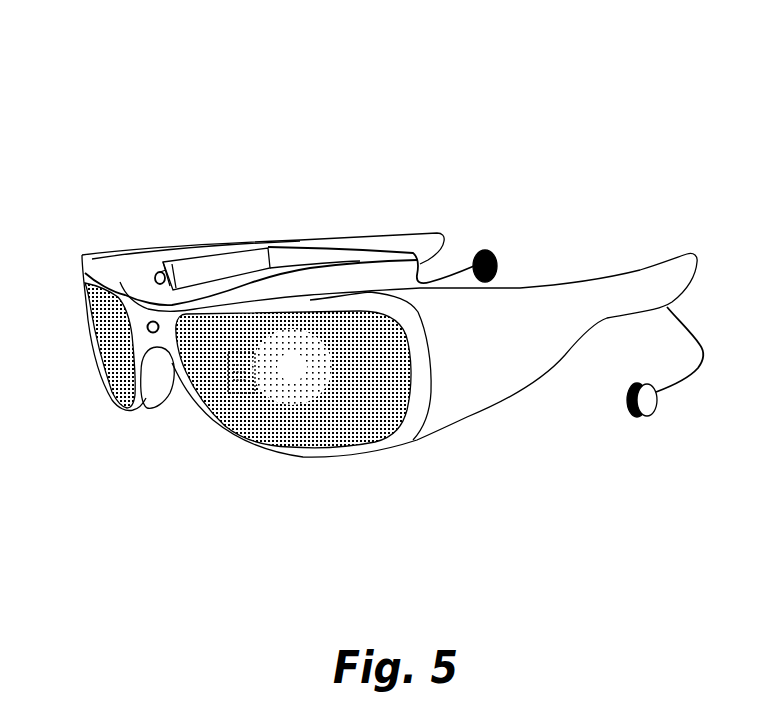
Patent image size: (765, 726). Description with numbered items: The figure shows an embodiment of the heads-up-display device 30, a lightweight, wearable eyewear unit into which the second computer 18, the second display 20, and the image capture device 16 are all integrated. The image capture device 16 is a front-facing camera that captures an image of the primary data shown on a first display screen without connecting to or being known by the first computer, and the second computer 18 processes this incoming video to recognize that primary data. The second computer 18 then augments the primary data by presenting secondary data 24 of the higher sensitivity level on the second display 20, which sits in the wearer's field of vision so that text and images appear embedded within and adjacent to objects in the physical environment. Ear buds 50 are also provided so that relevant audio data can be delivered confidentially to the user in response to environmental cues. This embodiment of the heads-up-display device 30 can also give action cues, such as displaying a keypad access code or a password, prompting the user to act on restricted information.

The heads-up-display device 30 is at (120, 97).
The image capture device 16 is at (148, 329).
The second computer 18 is at (200, 268).
The second display 20 is at (158, 275).
The secondary data 24 is at (247, 396).
The ear buds 50 is at (474, 249).